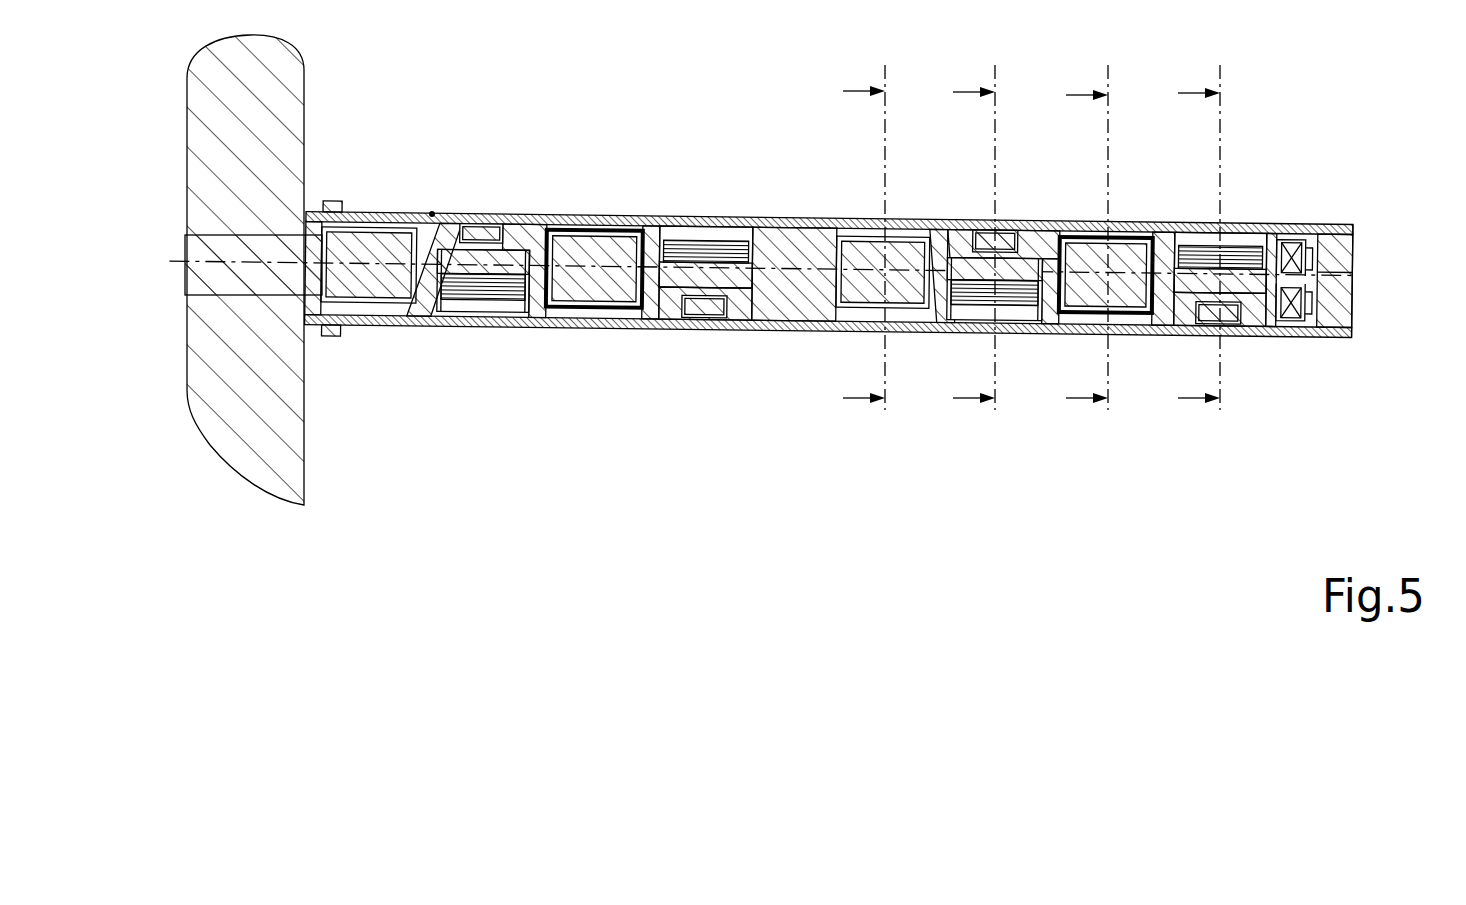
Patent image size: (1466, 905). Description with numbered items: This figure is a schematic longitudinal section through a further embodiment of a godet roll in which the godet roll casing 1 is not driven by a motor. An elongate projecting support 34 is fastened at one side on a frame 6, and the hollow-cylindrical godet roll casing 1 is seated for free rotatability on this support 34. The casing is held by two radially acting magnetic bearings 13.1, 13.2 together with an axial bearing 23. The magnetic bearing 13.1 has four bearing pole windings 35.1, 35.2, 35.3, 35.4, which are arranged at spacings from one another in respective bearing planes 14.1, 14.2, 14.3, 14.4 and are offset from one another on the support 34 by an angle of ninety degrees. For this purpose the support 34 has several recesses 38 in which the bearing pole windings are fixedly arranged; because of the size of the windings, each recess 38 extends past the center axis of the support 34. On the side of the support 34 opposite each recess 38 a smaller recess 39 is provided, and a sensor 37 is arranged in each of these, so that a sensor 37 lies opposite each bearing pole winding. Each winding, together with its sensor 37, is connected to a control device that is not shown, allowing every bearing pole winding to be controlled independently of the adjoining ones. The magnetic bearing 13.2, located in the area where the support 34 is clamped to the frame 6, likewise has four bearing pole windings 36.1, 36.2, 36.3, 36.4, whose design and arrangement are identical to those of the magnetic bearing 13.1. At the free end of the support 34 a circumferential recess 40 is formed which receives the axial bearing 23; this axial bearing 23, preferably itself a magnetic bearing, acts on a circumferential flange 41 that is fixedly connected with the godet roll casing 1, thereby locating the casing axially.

The godet roll casing 1 is at (648, 328).
The frame 6 is at (250, 422).
The magnetic bearing 13.1 is at (1038, 240).
The magnetic bearing 13.2 is at (433, 213).
The bearing plane 14.1 is at (882, 213).
The bearing plane 14.2 is at (990, 213).
The bearing plane 14.3 is at (1105, 213).
The bearing plane 14.4 is at (1218, 213).
The axial bearing 23 is at (1289, 244).
The support 34 is at (790, 304).
The bearing pole winding 35.1 is at (848, 262).
The bearing pole winding 35.2 is at (966, 319).
The bearing pole winding 35.3 is at (1085, 300).
The bearing pole winding 35.4 is at (1200, 242).
The bearing pole winding 36.1 is at (345, 267).
The bearing pole winding 36.2 is at (490, 308).
The bearing pole winding 36.3 is at (618, 232).
The bearing pole winding 36.4 is at (720, 238).
The sensor 37 is at (481, 222).
The recess 38 is at (417, 316).
The recess 39 is at (517, 219).
The circumferential recess 40 is at (1354, 255).
The circumferential flange 41 is at (1328, 228).